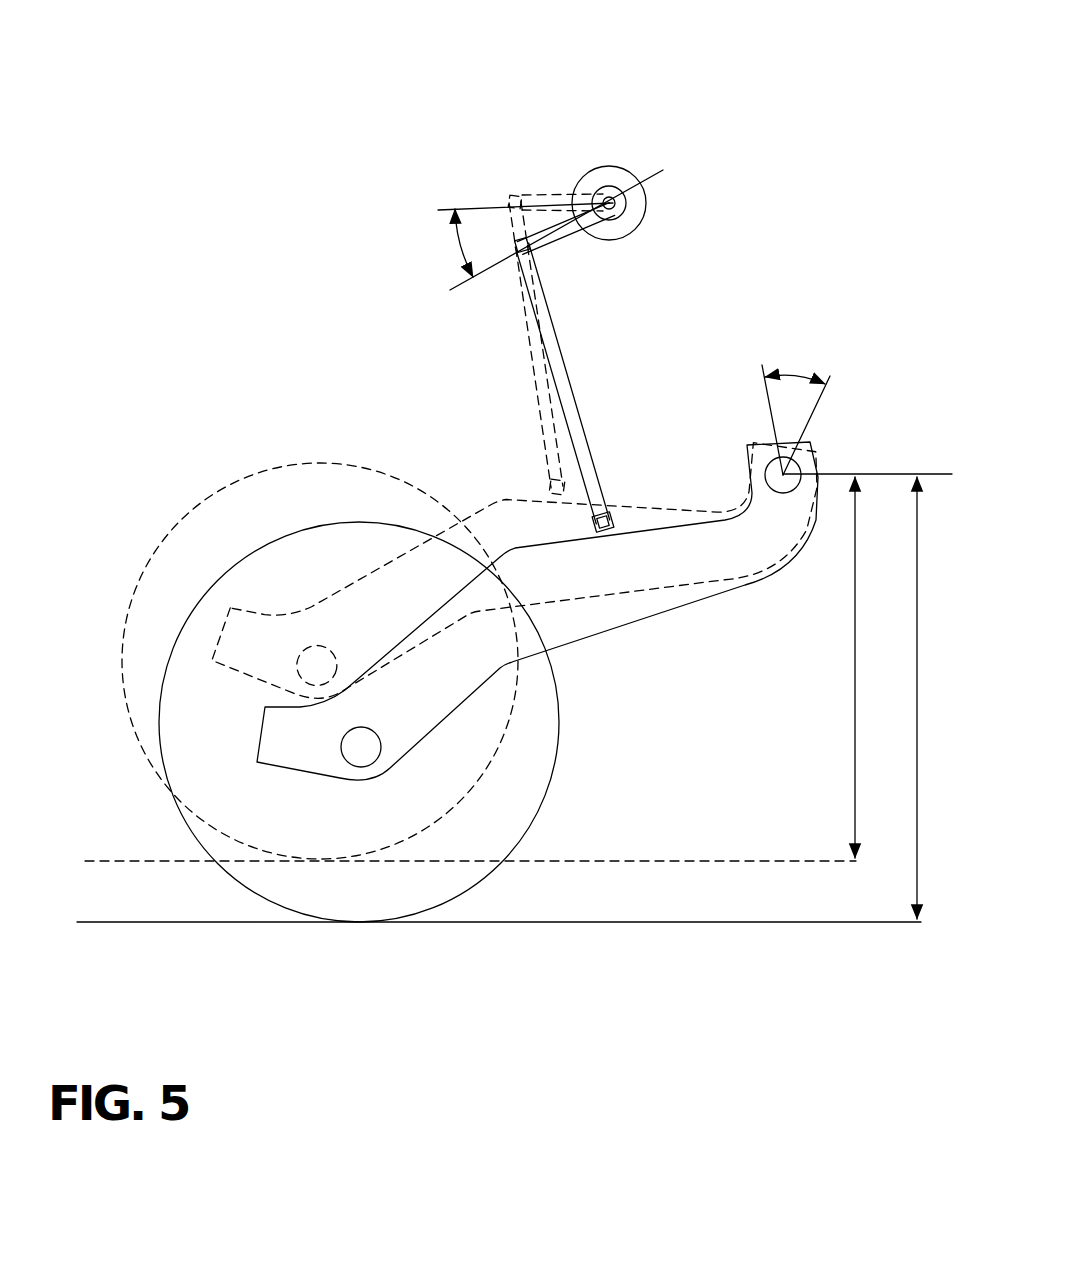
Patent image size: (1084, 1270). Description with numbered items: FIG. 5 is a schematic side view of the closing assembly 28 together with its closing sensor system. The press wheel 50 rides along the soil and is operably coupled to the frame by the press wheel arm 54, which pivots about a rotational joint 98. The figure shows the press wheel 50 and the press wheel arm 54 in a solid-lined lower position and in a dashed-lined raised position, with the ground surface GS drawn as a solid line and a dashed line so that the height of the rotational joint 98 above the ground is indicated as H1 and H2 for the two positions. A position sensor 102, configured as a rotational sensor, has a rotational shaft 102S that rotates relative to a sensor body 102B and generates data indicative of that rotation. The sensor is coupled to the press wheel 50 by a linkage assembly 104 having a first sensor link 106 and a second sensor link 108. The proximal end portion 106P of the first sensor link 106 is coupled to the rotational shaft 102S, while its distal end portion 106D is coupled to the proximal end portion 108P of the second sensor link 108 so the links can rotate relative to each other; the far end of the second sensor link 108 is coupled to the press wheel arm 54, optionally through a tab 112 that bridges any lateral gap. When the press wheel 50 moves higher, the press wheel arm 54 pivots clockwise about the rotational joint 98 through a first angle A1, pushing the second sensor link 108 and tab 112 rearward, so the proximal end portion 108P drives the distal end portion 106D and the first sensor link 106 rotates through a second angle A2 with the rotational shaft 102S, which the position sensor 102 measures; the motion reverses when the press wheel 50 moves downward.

The closing assembly 28 is at (564, 507).
The press wheel 50 is at (249, 470).
The press wheel arm 54 is at (503, 495).
The rotational joint 98 is at (818, 458).
The position sensor 102 is at (654, 127).
The rotational shaft 102S is at (607, 198).
The sensor body 102B is at (647, 203).
The linkage assembly 104 is at (579, 272).
The first sensor link 106 is at (574, 256).
The proximal end portion 106P is at (628, 197).
The distal end portion 106D is at (518, 252).
The second sensor link 108 is at (588, 421).
The proximal end portion 108P is at (512, 222).
The tab 112 is at (621, 527).
The ground surface GS is at (122, 858).
The first angle A1 is at (796, 410).
The second angle A2 is at (543, 230).
The pivot height (lowered) H1 is at (867, 696).
The pivot height (raised) H2 is at (870, 667).